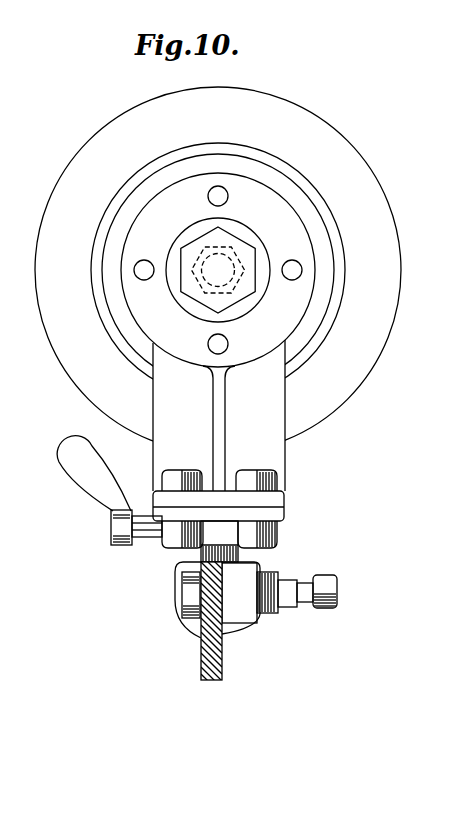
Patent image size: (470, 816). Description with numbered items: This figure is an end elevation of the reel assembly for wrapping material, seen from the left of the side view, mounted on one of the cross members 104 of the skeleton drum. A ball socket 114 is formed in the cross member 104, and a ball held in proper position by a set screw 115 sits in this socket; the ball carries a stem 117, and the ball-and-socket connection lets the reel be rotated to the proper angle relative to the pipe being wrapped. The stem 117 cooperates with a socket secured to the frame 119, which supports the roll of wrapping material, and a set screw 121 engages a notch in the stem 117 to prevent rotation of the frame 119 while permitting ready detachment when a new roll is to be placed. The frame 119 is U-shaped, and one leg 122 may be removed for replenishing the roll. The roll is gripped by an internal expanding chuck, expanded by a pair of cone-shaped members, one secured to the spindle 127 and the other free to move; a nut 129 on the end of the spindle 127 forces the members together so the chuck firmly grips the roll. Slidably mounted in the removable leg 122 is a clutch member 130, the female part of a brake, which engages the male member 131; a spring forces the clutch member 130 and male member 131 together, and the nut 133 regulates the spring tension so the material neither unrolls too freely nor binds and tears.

The cross member 104 is at (202, 657).
The ball socket 114 is at (235, 630).
The set screw 115 is at (323, 607).
The stem 117 is at (238, 555).
The frame 119 is at (275, 513).
The set screw 121 is at (147, 537).
The leg 122 is at (275, 452).
The spindle 127 is at (243, 300).
The nut 129 is at (240, 247).
The clutch member 130 is at (280, 180).
The male member 131 is at (338, 250).
The nut 133 is at (180, 283).